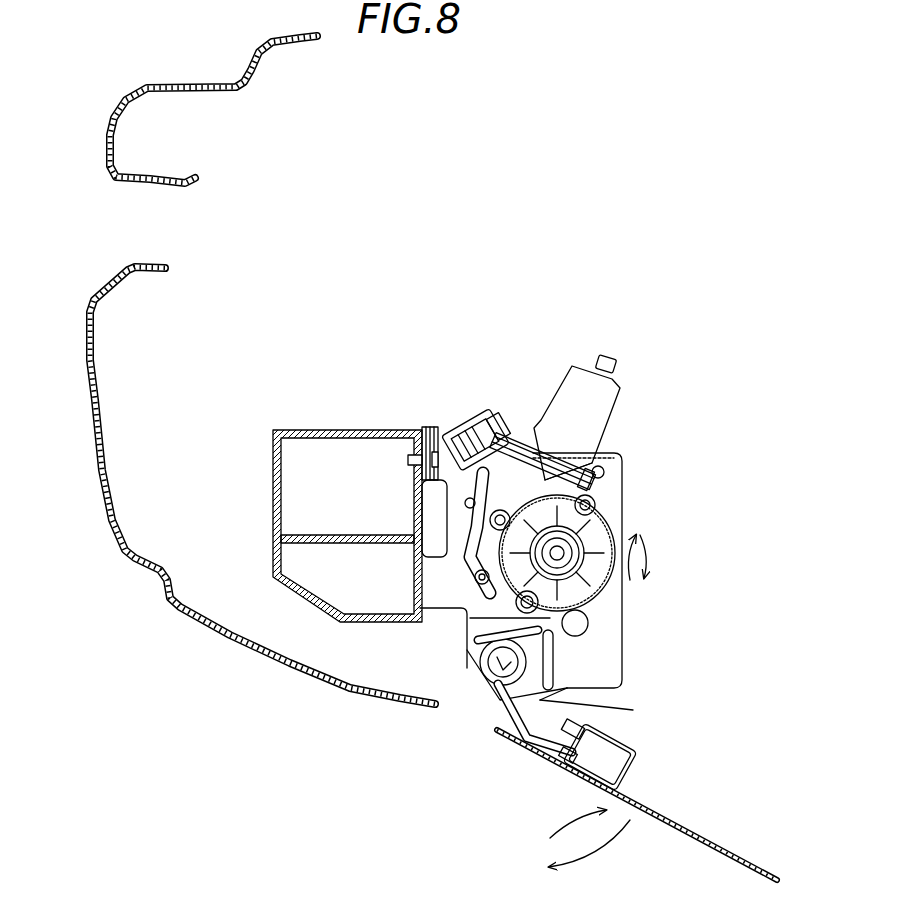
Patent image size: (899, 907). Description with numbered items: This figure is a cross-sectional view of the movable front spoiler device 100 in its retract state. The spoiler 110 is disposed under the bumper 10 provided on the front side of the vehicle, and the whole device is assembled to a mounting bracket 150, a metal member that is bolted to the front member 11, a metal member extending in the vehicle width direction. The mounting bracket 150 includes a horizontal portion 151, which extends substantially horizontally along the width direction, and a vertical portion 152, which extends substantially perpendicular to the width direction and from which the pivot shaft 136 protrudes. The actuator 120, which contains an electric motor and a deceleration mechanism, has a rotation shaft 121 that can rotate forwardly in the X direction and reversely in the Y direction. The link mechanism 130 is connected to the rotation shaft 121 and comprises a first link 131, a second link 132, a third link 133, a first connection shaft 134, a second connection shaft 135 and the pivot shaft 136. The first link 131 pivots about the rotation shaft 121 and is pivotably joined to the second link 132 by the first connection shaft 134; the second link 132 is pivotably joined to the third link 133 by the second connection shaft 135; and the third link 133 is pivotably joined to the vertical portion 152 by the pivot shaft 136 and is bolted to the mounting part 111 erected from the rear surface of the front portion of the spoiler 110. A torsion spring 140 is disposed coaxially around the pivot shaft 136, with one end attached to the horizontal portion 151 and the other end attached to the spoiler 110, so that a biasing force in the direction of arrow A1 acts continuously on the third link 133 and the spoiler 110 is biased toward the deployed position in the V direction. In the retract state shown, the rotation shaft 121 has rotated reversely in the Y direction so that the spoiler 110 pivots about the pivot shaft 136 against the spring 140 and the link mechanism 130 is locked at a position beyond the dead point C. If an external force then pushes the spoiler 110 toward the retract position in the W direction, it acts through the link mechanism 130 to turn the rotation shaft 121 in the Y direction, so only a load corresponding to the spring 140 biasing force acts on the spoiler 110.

The bumper 10 is at (240, 485).
The front member 11 is at (347, 504).
The movable front spoiler device 100 is at (562, 531).
The spoiler 110 is at (644, 805).
The mounting part 111 is at (620, 755).
The actuator 120 is at (605, 417).
The rotation shaft 121 is at (590, 553).
The link mechanism 130 is at (602, 588).
The first link 131 is at (613, 506).
The second link 132 is at (649, 621).
The third link 133 is at (638, 705).
The first connection shaft 134 is at (655, 488).
The second connection shaft 135 is at (626, 623).
The pivot shaft 136 is at (638, 694).
The spring 140 is at (492, 717).
The mounting bracket 150 is at (509, 489).
The horizontal portion 151 is at (493, 709).
The vertical portion 152 is at (440, 672).
The biasing force direction A1 is at (473, 720).
The dead point C is at (532, 409).
The forward rotation direction X is at (653, 557).
The reverse rotation direction Y is at (648, 569).
The pivot direction toward retract position W is at (578, 817).
The pivot direction toward deployed position V is at (589, 860).